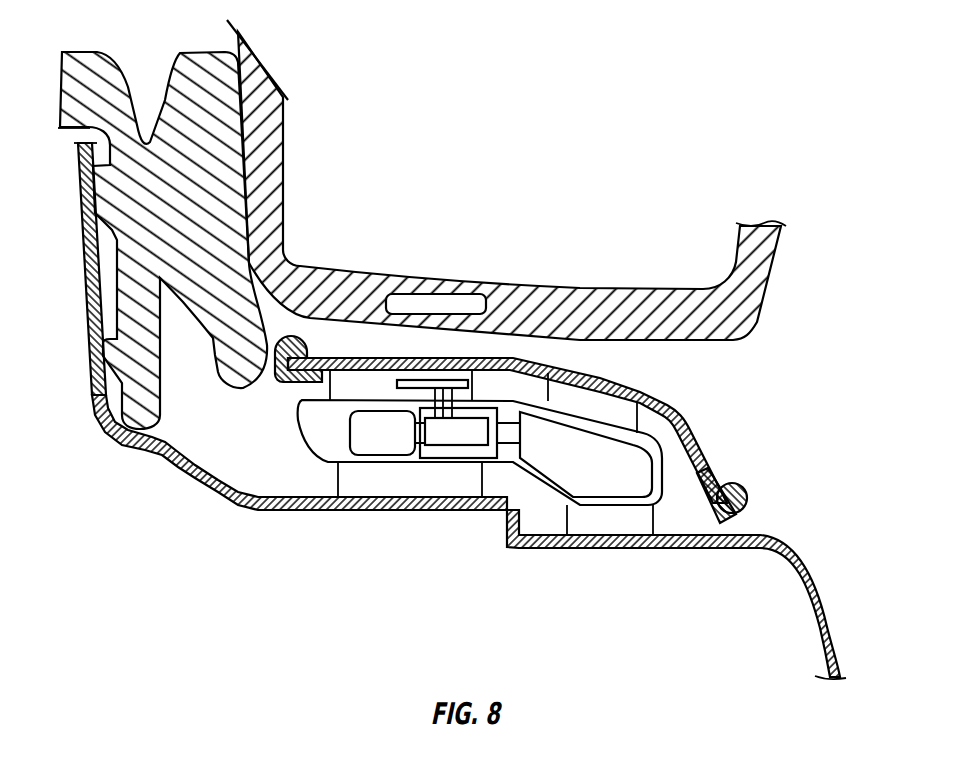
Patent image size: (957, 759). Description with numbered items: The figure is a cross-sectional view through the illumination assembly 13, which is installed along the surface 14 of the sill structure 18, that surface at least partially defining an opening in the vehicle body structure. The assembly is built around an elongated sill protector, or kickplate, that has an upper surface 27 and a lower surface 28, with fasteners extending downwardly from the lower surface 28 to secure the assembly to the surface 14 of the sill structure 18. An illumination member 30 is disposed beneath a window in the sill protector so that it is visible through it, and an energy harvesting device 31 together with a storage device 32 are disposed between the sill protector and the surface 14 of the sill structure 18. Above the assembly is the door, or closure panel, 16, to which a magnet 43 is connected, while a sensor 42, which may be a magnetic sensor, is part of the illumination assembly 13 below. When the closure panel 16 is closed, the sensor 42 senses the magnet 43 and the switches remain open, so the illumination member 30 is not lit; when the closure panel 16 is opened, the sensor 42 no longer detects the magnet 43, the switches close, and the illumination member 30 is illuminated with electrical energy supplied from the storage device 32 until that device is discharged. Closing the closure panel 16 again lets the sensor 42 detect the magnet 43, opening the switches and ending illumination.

The illumination assembly 13 is at (793, 427).
The surface 14 is at (764, 534).
The door (closure panel) 16 is at (772, 290).
The sill structure 18 is at (293, 512).
The upper surface 27 is at (664, 396).
The lower surface 28 is at (695, 453).
The illumination member 30 is at (447, 445).
The energy harvesting device 31 is at (597, 498).
The storage device 32 is at (348, 445).
The sensor 42 is at (423, 375).
The magnet 43 is at (420, 380).